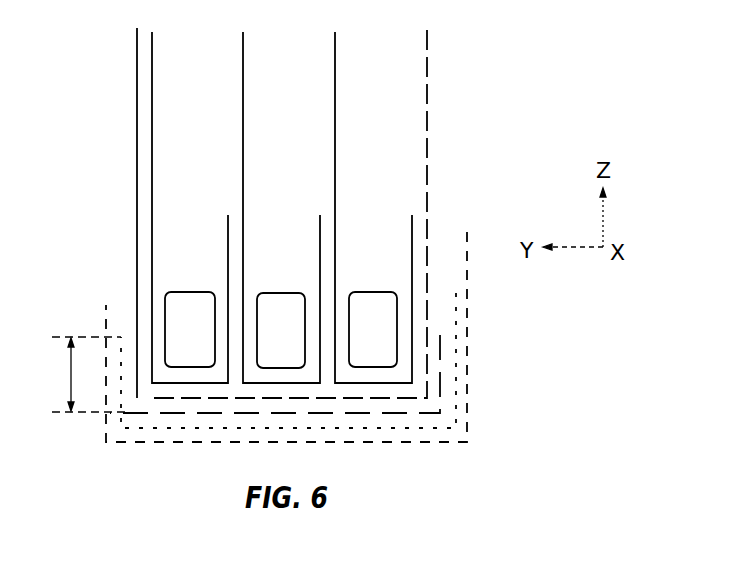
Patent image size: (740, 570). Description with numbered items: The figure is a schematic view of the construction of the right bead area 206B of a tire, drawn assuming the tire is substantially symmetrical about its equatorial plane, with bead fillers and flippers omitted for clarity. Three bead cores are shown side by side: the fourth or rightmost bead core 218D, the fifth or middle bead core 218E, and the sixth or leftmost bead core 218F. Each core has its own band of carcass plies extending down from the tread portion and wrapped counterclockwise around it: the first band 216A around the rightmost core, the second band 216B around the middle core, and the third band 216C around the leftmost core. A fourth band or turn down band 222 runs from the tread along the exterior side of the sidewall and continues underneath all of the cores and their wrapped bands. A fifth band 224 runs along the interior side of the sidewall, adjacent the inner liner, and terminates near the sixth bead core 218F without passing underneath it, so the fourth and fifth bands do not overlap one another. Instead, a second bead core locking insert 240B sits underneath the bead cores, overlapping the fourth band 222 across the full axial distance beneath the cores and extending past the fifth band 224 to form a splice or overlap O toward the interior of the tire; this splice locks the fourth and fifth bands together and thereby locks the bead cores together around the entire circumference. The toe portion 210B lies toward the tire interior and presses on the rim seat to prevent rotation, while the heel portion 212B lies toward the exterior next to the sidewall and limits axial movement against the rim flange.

The right bead area 206B is at (498, 293).
The fifth band 224 is at (137, 145).
The first band of carcass plies 216A is at (335, 118).
The second band of carcass plies 216B is at (244, 118).
The third band of carcass plies 216C is at (152, 118).
The fourth bead core 218D is at (381, 298).
The fifth bead core 218E is at (289, 298).
The sixth bead core 218F is at (198, 298).
The fourth band 222 is at (427, 143).
The second bead core locking insert 240B is at (440, 383).
The heel portion 212B is at (467, 443).
The toe portion 210B is at (152, 445).
The splice or overlap O is at (67, 375).